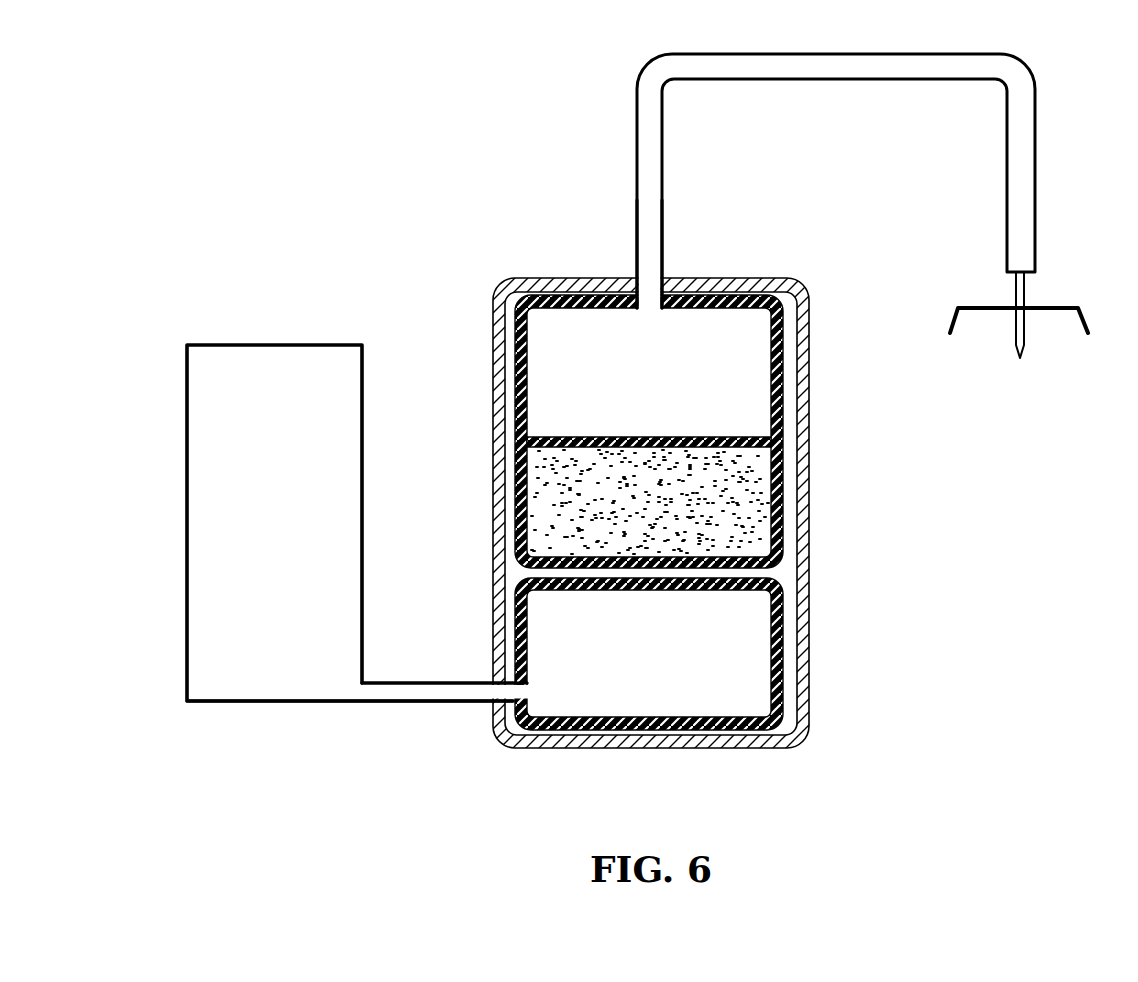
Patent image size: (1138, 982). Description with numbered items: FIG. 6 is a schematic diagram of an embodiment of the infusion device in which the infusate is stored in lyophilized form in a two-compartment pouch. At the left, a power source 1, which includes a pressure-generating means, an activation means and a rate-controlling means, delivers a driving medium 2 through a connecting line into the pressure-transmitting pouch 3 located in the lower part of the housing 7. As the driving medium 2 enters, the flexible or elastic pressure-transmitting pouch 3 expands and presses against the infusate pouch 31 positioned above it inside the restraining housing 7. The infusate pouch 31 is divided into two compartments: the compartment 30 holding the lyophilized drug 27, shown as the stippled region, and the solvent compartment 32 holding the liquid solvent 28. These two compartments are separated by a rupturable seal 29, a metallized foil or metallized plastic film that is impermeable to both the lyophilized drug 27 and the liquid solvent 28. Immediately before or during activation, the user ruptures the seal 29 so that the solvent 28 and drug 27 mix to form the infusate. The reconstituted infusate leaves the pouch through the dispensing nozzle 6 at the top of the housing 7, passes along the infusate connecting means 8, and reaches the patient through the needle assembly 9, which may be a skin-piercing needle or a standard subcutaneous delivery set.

The power source 1 is at (172, 539).
The driving medium 2 is at (730, 665).
The pressure-transmitting pouch 3 is at (777, 610).
The dispensing nozzle 6 is at (660, 260).
The housing 7 is at (500, 292).
The infusate connecting means 8 is at (642, 142).
The needle assembly 9 is at (1062, 285).
The lyophilized drug 27 is at (732, 516).
The liquid solvent 28 is at (740, 342).
The rupturable seal 29 is at (737, 436).
The drug compartment 30 is at (782, 475).
The infusate pouch 31 is at (513, 385).
The solvent compartment 32 is at (513, 337).